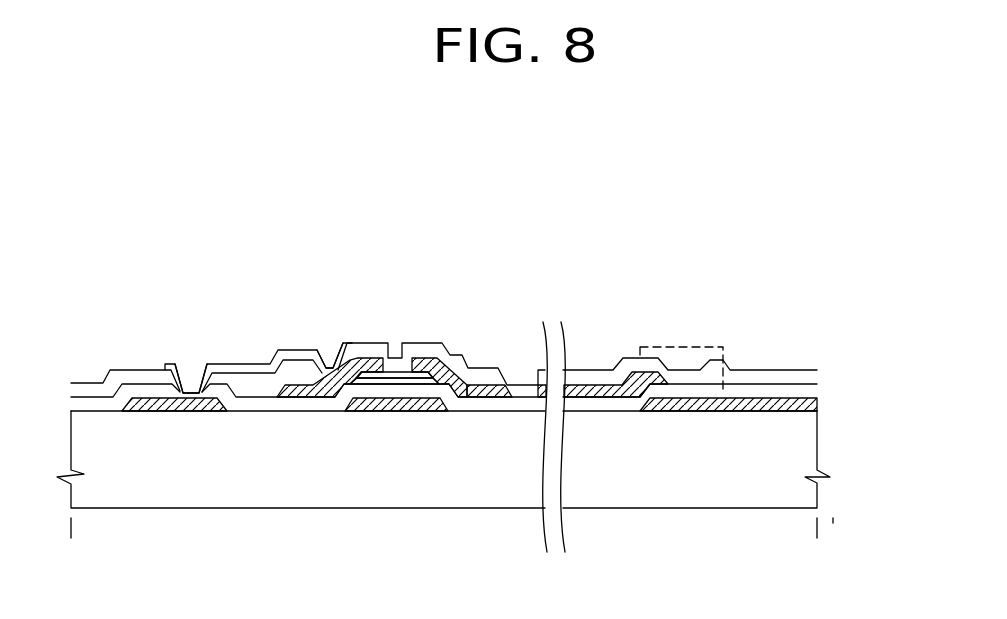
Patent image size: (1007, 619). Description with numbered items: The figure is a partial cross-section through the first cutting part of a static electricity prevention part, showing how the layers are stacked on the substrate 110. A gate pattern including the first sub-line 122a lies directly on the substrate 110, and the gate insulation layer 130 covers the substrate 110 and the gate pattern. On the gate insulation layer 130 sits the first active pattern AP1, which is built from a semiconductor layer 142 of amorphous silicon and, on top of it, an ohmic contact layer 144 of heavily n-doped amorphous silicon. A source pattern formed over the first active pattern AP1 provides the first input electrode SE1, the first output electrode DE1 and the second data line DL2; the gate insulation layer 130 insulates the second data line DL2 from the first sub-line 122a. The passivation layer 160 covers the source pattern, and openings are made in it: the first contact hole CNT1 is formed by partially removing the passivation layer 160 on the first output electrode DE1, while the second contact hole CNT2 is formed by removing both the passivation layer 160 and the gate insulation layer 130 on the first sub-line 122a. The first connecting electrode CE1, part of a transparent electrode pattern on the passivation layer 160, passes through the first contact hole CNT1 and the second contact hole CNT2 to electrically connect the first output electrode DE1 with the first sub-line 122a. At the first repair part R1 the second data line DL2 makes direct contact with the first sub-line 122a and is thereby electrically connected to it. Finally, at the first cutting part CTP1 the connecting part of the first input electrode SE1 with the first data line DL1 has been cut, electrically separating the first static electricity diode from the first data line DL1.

The substrate 110 is at (817, 443).
The first sub-line 122a is at (722, 404).
The gate insulation layer 130 is at (817, 385).
The semiconductor layer 142 is at (372, 384).
The ohmic contact layer 144 is at (430, 376).
The first active pattern AP1 is at (392, 494).
The first output electrode DE1 is at (298, 390).
The first input electrode SE1 is at (489, 395).
The first cutting part CTP1 is at (511, 378).
The first data line DL1 is at (545, 330).
The second data line DL2 is at (657, 399).
The passivation layer 160 is at (817, 369).
The first connecting electrode CE1 is at (272, 357).
The first contact hole CNT1 is at (330, 346).
The second contact hole CNT2 is at (197, 365).
The first repair part R1 is at (676, 340).